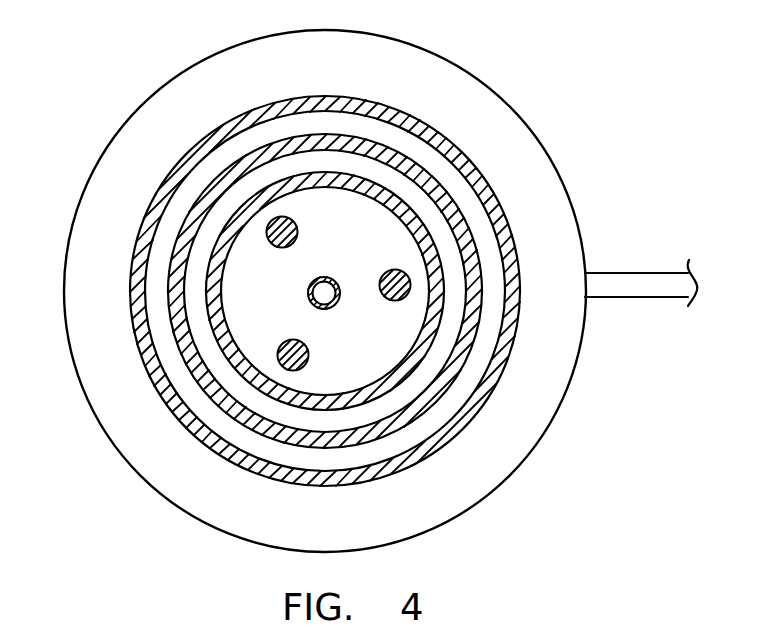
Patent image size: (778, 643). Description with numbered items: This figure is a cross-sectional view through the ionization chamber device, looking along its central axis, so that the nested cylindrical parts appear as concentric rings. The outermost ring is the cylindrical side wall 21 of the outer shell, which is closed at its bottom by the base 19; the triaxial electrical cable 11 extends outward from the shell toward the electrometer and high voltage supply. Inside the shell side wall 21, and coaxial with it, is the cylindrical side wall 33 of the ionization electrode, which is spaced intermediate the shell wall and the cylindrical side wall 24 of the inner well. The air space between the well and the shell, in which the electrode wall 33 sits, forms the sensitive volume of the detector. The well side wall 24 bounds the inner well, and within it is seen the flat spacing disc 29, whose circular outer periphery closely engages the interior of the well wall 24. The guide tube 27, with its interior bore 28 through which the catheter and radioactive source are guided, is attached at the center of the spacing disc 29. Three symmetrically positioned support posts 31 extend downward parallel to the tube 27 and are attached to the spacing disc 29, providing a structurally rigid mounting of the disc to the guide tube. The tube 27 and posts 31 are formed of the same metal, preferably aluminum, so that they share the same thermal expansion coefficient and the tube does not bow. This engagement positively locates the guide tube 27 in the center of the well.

The triaxial electrical cable 11 is at (612, 273).
The base section 19 is at (565, 193).
The cylindrical side wall 21 is at (142, 222).
The cylindrical side wall of the well 24 is at (308, 410).
The guide tube 27 is at (331, 307).
The interior bore 28 is at (316, 282).
The spacing disc 29 is at (327, 391).
The support posts 31 is at (398, 270).
The cylindrical side wall of the ionization electrode 33 is at (177, 241).